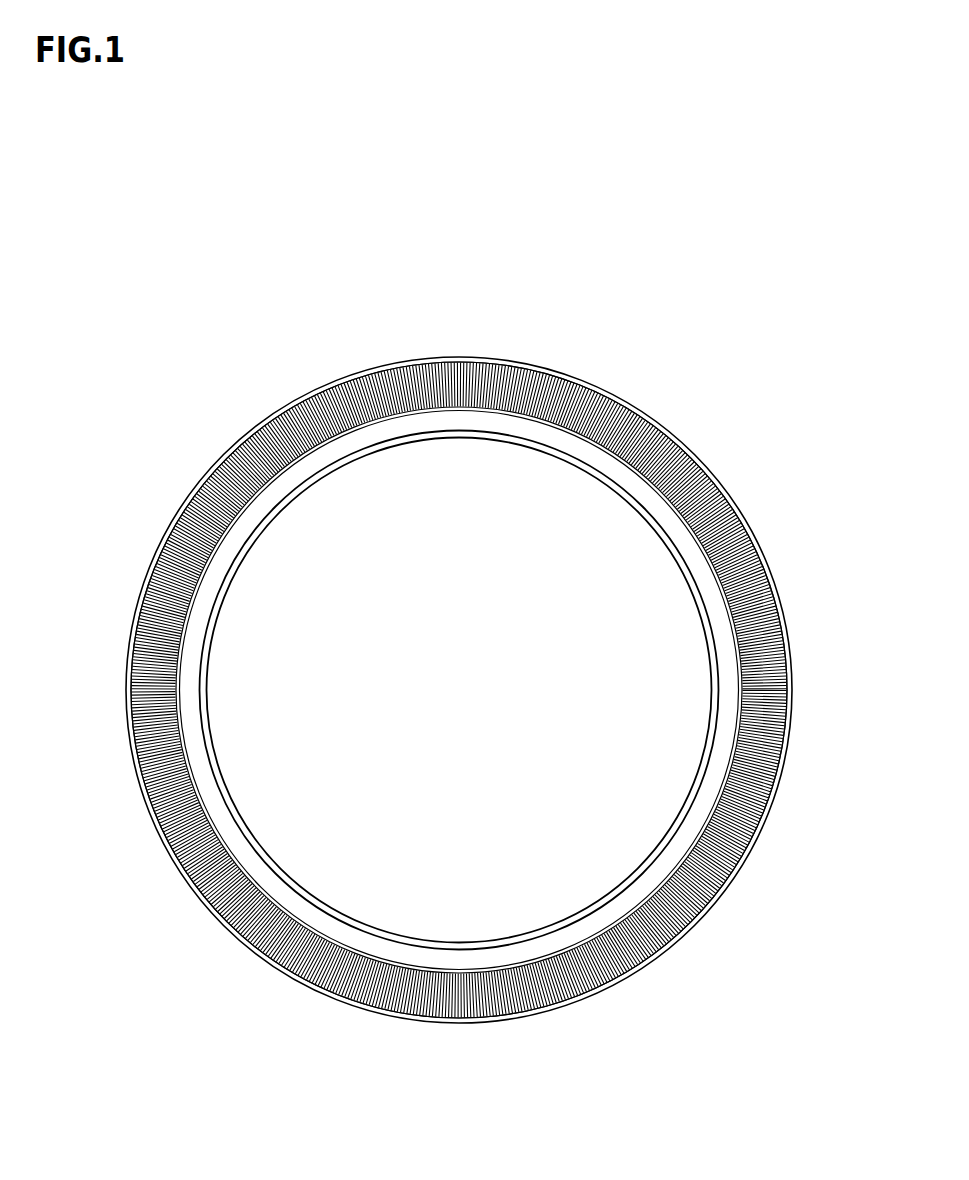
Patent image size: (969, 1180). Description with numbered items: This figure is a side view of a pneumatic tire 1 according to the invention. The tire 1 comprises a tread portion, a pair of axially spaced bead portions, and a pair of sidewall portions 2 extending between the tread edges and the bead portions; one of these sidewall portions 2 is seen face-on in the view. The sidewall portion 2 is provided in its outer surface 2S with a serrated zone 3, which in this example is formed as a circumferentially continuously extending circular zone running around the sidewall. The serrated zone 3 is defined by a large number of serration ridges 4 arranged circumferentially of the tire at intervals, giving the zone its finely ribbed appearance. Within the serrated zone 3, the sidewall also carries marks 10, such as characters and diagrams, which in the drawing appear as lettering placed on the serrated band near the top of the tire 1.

The pneumatic tire 1 is at (492, 655).
The sidewall portion 2 is at (519, 690).
The outer surface 2S is at (668, 518).
The serrated zone 3 is at (485, 690).
The serration ridges 4 is at (730, 570).
The marks 10 is at (358, 379).